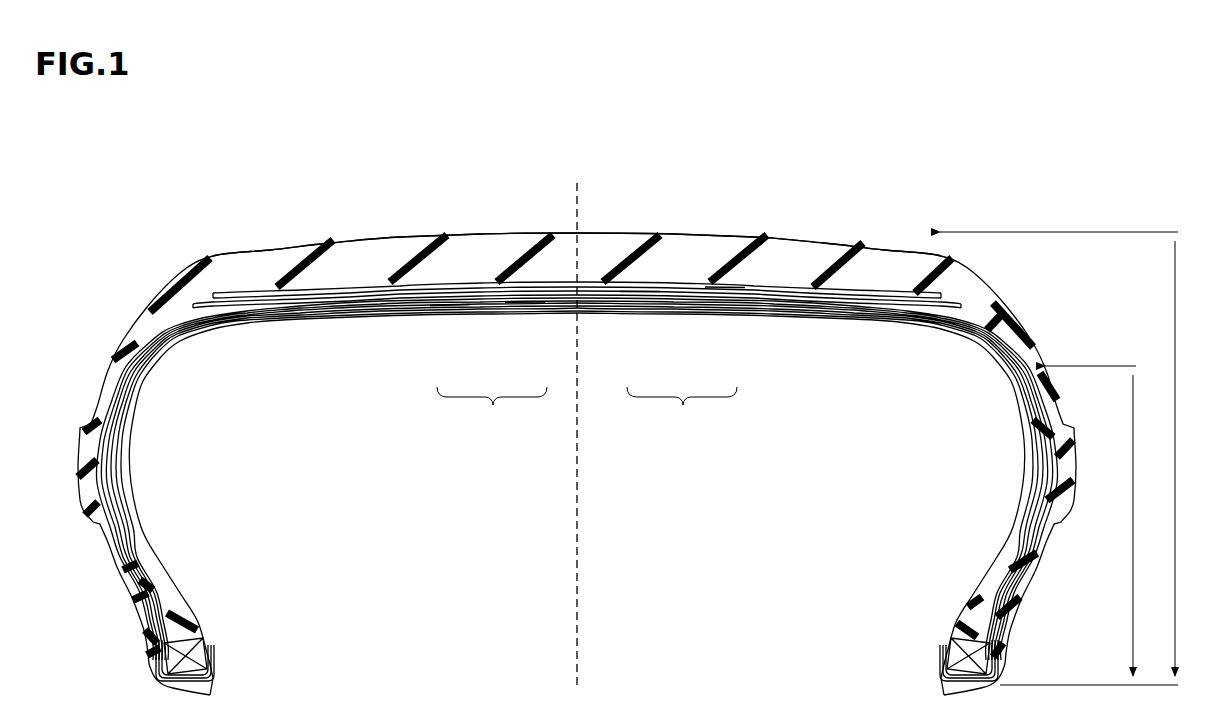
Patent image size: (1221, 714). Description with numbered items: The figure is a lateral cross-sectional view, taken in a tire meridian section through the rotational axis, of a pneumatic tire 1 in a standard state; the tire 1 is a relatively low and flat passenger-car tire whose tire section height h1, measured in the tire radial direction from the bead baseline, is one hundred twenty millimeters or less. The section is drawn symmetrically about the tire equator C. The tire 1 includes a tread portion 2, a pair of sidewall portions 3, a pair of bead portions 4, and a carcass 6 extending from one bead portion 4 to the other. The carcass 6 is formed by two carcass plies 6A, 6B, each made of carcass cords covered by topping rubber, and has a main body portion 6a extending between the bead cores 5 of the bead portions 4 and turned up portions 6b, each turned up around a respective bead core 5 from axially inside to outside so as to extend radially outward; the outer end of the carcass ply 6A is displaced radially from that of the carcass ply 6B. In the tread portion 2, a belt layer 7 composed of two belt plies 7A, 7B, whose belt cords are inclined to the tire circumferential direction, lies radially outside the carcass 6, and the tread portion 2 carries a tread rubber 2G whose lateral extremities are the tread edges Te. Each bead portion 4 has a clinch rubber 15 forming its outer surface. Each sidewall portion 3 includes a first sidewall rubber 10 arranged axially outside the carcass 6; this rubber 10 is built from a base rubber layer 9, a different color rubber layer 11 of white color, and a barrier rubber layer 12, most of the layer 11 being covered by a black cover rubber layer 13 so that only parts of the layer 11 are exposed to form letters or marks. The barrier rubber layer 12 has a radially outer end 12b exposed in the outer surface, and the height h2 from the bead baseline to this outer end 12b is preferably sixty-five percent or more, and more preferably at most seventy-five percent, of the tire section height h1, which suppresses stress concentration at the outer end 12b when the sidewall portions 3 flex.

The pneumatic tire 1 is at (242, 227).
The tread portion 2 is at (461, 230).
The tread rubber 2G is at (363, 260).
The sidewall portion 3 is at (95, 378).
The bead portion 4 is at (128, 627).
The bead core 5 is at (213, 648).
The carcass 6 is at (576, 489).
The carcass ply 6A is at (450, 305).
The carcass ply 6B is at (523, 304).
The main body portion 6a is at (953, 608).
The turned up portion 6b is at (983, 567).
The belt layer 7 is at (577, 358).
The belt ply 7A is at (640, 296).
The belt ply 7B is at (730, 291).
The base rubber layer 9 is at (134, 397).
The first sidewall rubber 10 is at (128, 340).
The different color rubber layer 11 is at (90, 490).
The barrier rubber layer 12 is at (100, 457).
The outer end 12b is at (1043, 367).
The cover rubber layer 13 is at (1057, 423).
The clinch rubber 15 is at (133, 580).
The tread edge Te is at (211, 255).
The tire equator C is at (577, 420).
The tire section height h1 is at (1074, 458).
The height of the barrier rubber layer h2 is at (1106, 521).